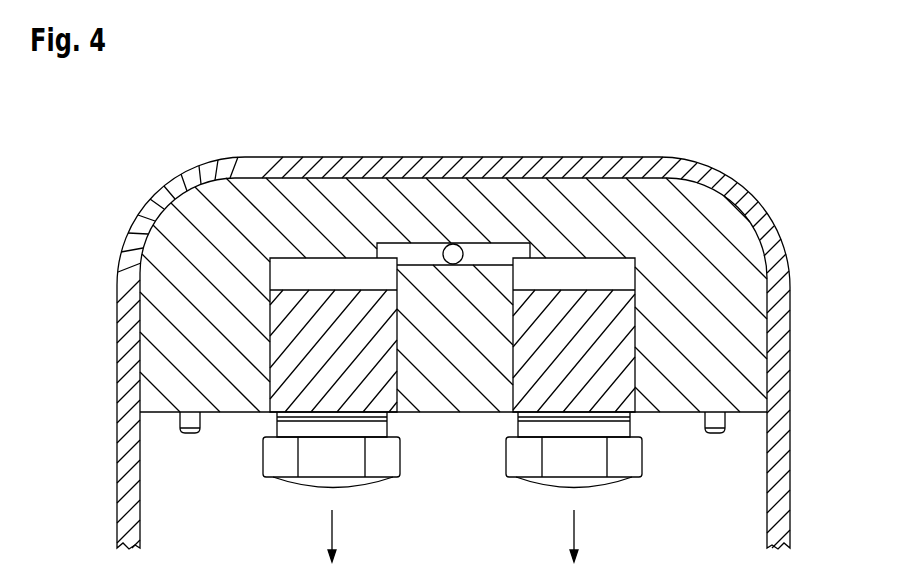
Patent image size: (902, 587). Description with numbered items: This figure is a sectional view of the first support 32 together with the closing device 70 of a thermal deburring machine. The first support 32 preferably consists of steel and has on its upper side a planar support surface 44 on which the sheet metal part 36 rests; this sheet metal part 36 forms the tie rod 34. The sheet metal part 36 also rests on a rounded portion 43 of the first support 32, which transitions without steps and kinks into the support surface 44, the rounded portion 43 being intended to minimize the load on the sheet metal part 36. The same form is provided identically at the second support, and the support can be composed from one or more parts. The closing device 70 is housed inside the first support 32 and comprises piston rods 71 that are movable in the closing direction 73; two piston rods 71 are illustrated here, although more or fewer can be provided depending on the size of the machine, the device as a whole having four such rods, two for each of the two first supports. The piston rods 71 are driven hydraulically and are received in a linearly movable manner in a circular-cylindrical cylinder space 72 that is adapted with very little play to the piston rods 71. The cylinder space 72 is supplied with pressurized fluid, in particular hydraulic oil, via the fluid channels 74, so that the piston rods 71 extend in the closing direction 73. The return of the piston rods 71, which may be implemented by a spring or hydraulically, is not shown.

The first support 32 is at (750, 326).
The tie rod 34 is at (117, 509).
The sheet metal part 36 is at (783, 366).
The rounded portion 43 is at (170, 212).
The support surface 44 is at (514, 175).
The closing device 70 is at (480, 488).
The piston rod 71 is at (300, 305).
The cylinder space 72 is at (348, 275).
The closing direction 73 is at (332, 532).
The fluid channel 74 is at (417, 258).